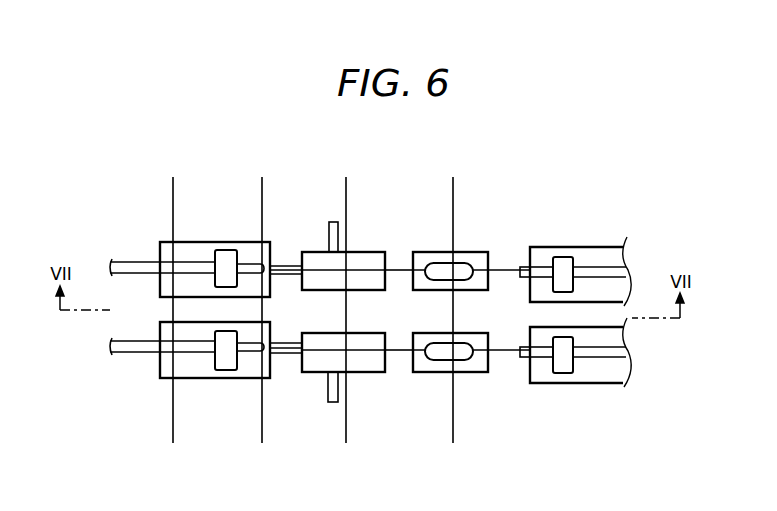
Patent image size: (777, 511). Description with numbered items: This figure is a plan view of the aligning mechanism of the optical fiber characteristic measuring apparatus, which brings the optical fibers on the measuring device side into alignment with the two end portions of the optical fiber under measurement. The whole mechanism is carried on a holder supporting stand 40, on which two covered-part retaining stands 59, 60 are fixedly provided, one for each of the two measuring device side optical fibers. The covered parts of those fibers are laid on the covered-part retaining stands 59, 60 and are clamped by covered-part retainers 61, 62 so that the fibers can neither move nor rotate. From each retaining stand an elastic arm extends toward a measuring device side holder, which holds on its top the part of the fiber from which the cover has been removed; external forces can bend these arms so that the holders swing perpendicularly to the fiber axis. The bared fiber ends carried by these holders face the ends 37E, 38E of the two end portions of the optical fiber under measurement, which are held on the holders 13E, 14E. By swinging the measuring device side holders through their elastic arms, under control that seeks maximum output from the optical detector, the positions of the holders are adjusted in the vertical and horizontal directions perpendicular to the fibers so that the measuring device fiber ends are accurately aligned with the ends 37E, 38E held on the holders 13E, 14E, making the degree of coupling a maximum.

The holder supporting stand 40 is at (195, 203).
The covered-part retaining stand 60 is at (160, 243).
The covered-part retainer 62 is at (223, 250).
The covered-part retaining stand 59 is at (197, 379).
The covered-part retainer 61 is at (224, 371).
The end of end portion of optical fiber under measurement 38E is at (403, 268).
The holder 14E is at (460, 252).
The end of end portion of optical fiber under measurement 37E is at (400, 352).
The holder 13E is at (463, 373).